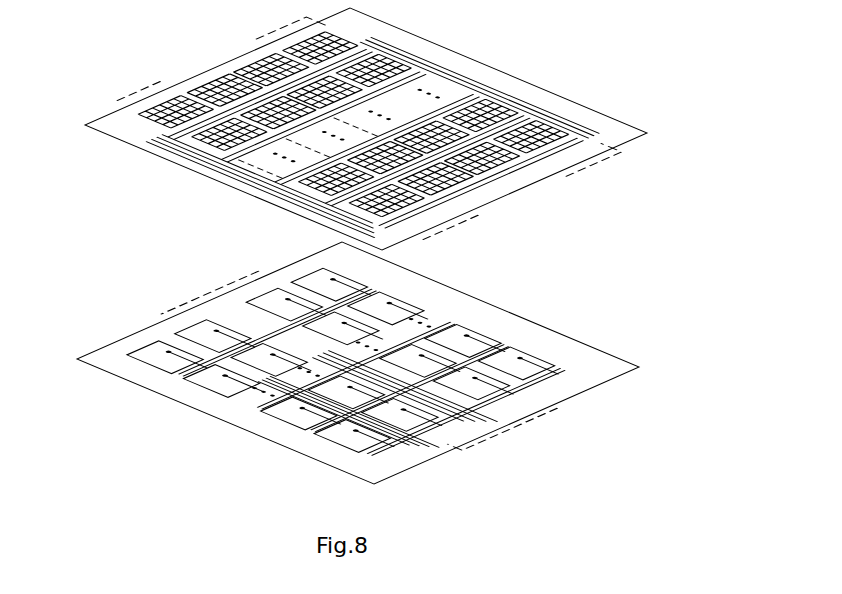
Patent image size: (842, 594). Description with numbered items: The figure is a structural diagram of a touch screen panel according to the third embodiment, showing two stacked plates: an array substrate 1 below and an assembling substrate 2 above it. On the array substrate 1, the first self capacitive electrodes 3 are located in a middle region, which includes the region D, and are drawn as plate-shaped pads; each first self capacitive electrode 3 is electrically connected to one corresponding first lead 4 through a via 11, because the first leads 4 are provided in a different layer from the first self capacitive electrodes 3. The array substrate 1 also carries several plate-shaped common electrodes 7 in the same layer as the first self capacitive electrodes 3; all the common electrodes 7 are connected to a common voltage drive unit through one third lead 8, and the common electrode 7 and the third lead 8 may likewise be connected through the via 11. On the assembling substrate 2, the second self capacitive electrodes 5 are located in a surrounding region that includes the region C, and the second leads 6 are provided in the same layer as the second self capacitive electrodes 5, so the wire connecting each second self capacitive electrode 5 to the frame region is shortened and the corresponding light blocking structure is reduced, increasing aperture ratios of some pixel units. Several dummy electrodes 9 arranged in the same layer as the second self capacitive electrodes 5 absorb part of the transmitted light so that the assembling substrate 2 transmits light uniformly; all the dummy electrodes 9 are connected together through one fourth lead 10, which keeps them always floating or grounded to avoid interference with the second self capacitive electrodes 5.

The array substrate 1 is at (222, 440).
The assembling substrate 2 is at (532, 69).
The first self capacitive electrode 3 is at (225, 328).
The first lead 4 is at (292, 300).
The second self capacitive electrode 5 is at (160, 119).
The second lead 6 is at (187, 160).
The common electrode 7 is at (170, 350).
The third lead 8 is at (340, 418).
The dummy electrode 9 is at (445, 190).
The fourth lead 10 is at (470, 175).
The via 11 is at (355, 435).
The region C is at (255, 40).
The region D is at (497, 440).